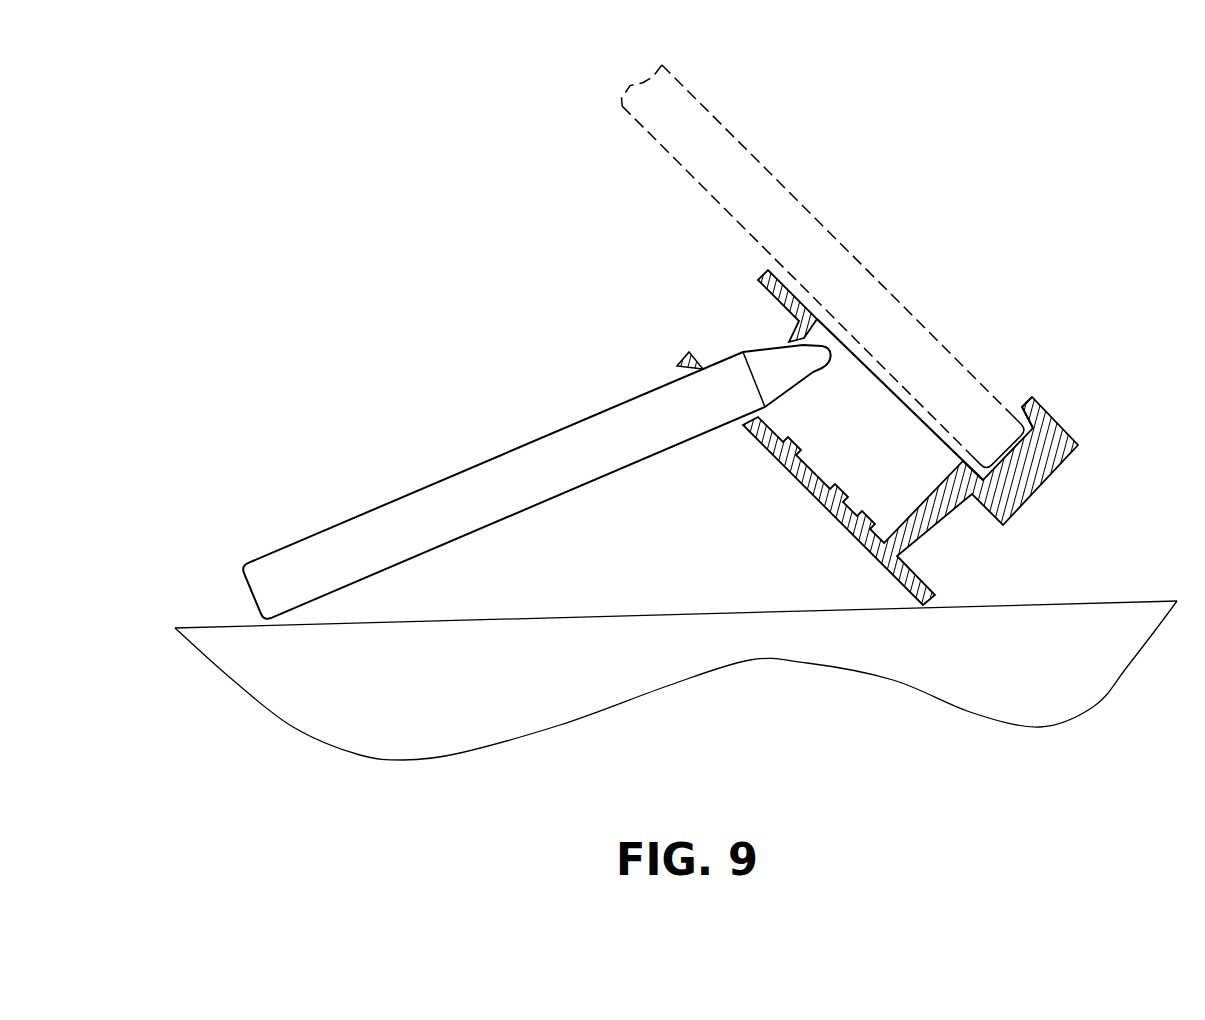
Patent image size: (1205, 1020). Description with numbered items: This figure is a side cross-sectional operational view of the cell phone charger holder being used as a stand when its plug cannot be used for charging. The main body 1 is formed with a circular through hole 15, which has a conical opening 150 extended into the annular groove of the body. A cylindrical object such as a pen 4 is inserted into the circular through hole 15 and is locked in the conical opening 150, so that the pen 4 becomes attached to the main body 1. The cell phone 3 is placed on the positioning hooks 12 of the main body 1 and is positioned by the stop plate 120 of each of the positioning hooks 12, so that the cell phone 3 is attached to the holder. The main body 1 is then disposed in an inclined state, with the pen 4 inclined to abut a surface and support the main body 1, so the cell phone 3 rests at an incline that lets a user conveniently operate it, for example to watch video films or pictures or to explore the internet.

The main body 1 is at (887, 415).
The cell phone 3 is at (856, 266).
The pen 4 is at (452, 493).
The positioning hook 12 is at (1042, 484).
The circular through hole 15 is at (702, 367).
The stop plate 120 is at (1020, 405).
The conical opening 150 is at (787, 338).